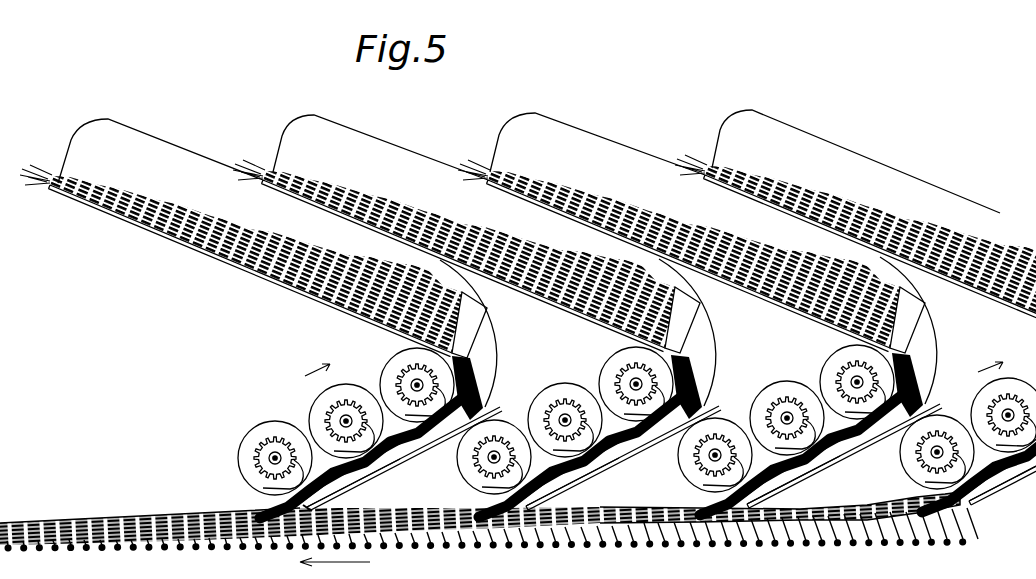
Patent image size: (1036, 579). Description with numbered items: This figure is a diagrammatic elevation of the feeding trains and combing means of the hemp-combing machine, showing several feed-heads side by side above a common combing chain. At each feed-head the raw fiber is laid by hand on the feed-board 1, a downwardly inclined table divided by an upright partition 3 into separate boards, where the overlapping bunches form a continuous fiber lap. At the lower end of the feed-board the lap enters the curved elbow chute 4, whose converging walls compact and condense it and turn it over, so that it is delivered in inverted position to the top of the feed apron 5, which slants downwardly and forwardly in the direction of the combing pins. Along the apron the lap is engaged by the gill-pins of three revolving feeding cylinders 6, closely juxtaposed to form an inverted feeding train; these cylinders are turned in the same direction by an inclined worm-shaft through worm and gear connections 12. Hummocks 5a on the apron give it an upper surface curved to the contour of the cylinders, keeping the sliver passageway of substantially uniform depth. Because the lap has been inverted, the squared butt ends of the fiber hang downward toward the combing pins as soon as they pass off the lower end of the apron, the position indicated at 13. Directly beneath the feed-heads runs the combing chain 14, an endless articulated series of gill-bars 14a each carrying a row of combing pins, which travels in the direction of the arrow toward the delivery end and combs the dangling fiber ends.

The feed-board 1 is at (763, 196).
The upright partition 3 is at (912, 170).
The elbow chute 4 is at (940, 348).
The feed apron 5 is at (671, 456).
The hummocks 5a is at (671, 477).
The revolving feeding cylinders 6 is at (995, 400).
The worm and gear connections 12 is at (917, 460).
The position of squared fiber ends 13 is at (322, 506).
The combing chain 14 is at (990, 524).
The gill-bars 14a is at (177, 550).